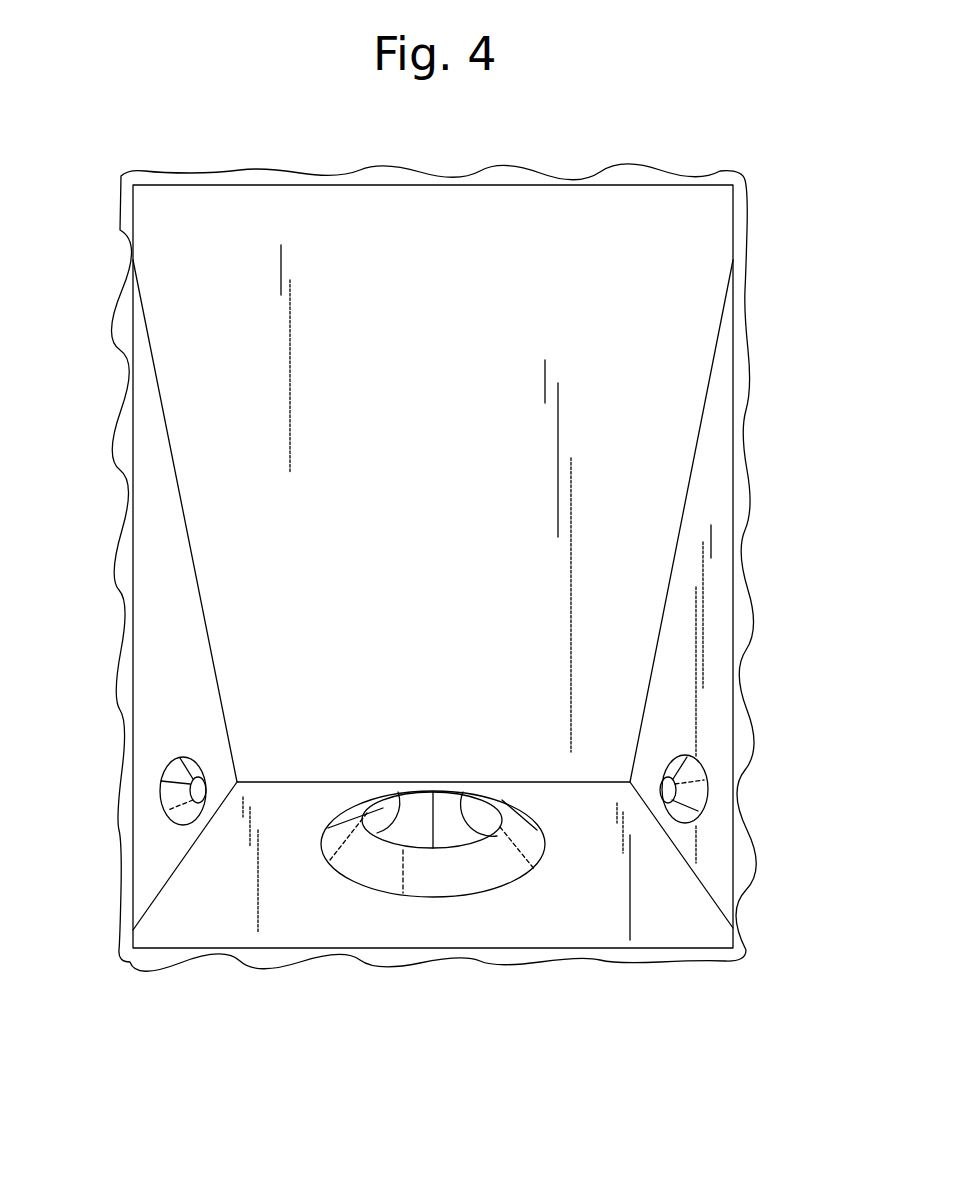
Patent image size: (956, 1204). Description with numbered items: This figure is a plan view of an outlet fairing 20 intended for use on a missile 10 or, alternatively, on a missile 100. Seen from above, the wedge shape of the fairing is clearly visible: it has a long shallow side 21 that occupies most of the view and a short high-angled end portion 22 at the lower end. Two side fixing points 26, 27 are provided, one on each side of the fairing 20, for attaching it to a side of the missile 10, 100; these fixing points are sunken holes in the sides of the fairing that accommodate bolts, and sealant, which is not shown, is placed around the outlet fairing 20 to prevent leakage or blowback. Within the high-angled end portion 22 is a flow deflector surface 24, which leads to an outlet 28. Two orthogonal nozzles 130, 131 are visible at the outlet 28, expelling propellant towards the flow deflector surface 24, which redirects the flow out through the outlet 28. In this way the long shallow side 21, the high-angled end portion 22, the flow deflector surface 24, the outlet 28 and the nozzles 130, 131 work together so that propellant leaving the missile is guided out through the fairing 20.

The missile 10 is at (433, 522).
The missile 100 is at (562, 170).
The outlet fairing 20 is at (655, 502).
The long shallow side 21 is at (267, 600).
The short high-angled end portion 22 is at (607, 915).
The flow deflector surface 24 is at (387, 875).
The side fixing point 26 is at (196, 792).
The side fixing point 27 is at (670, 790).
The outlet 28 is at (448, 892).
The nozzle 130 is at (382, 810).
The nozzle 131 is at (488, 813).